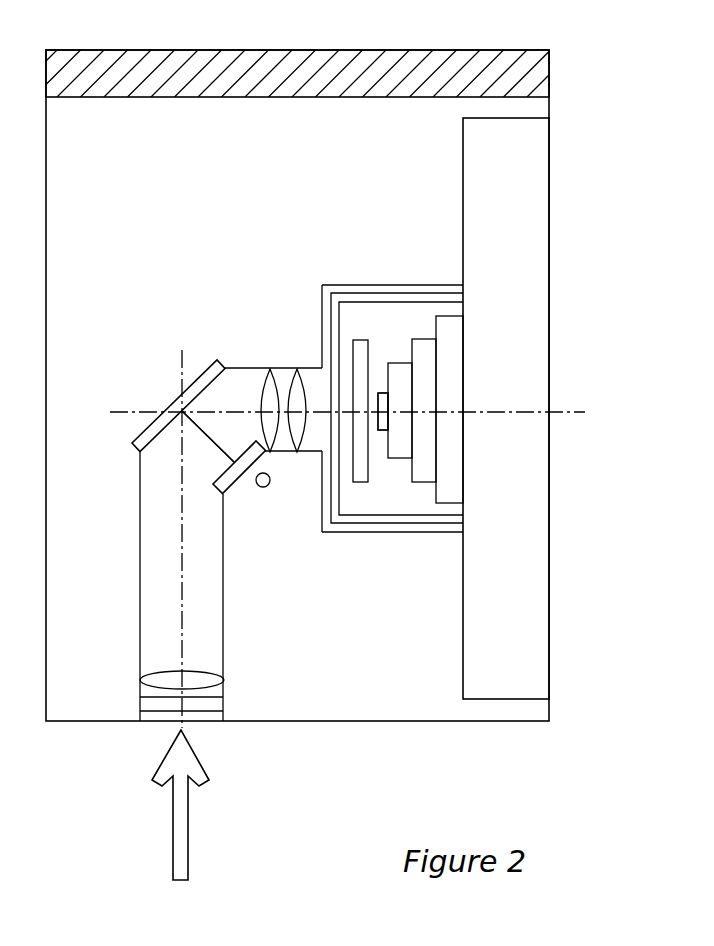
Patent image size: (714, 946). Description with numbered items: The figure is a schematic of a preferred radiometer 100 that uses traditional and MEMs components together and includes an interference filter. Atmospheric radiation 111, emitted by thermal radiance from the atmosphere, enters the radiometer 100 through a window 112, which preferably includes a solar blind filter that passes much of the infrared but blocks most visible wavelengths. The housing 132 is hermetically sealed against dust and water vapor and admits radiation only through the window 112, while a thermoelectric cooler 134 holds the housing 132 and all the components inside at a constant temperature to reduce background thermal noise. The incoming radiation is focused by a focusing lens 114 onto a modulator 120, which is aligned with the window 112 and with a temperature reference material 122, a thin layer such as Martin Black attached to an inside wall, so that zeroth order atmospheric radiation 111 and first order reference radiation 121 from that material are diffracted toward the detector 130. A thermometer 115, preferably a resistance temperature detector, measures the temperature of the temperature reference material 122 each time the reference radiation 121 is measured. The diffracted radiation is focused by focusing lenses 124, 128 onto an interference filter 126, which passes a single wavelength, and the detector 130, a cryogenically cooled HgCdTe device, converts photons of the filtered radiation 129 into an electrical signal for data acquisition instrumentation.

The radiometer 100 is at (105, 40).
The atmospheric radiation 111 is at (180, 823).
The window 112 is at (217, 702).
The focusing lens 114 is at (212, 678).
The thermometer 115 is at (268, 487).
The modulator 120 is at (178, 397).
The reference radiation 121 is at (200, 446).
The temperature reference material 122 is at (224, 495).
The focusing lens 124 is at (270, 369).
The interference filter 126 is at (362, 340).
The focusing lens 128 is at (297, 369).
The filtered radiation 129 is at (371, 411).
The detector 130 is at (398, 403).
The housing 132 is at (552, 108).
The thermoelectric cooler 134 is at (552, 63).